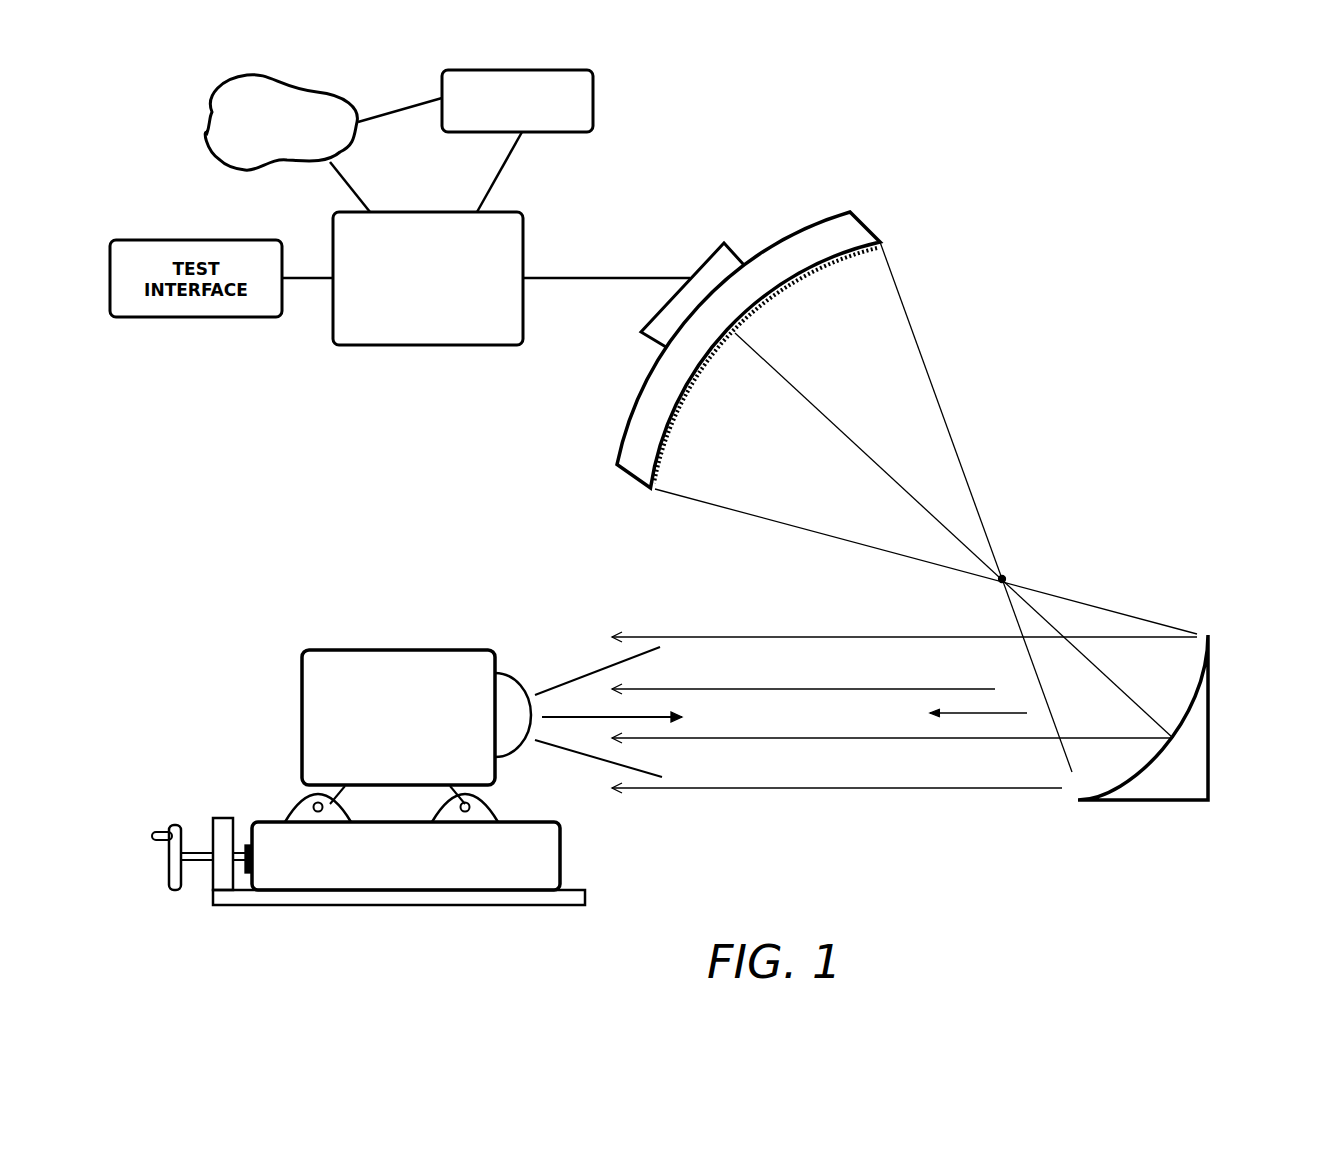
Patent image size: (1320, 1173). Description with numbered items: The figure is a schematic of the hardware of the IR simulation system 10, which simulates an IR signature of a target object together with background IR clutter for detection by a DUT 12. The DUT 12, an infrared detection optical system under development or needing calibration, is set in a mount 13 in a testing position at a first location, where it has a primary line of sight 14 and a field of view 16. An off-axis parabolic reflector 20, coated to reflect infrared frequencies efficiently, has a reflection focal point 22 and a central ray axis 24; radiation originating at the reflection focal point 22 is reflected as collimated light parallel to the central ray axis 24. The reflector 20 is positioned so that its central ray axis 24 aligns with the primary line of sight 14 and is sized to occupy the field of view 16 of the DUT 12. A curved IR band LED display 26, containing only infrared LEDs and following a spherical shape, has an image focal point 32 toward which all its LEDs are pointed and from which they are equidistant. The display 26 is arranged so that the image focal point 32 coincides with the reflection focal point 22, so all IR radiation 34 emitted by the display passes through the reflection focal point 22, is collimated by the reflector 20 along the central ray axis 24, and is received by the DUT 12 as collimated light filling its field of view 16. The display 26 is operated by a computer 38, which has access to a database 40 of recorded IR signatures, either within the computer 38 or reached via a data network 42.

The IR simulation system 10 is at (893, 145).
The DUT 12 is at (362, 650).
The mount 13 is at (528, 867).
The primary line of sight 14 is at (577, 715).
The field of view 16 is at (633, 768).
The off-axis parabolic reflector 20 is at (1212, 695).
The reflection focal point 22 is at (1008, 573).
The central ray axis 24 is at (995, 716).
The IR band LED display 26 is at (858, 225).
The image focal point 32 is at (1000, 581).
The IR radiation 34 is at (935, 398).
The computer 38 is at (523, 243).
The database 40 is at (593, 113).
The data network 42 is at (207, 145).